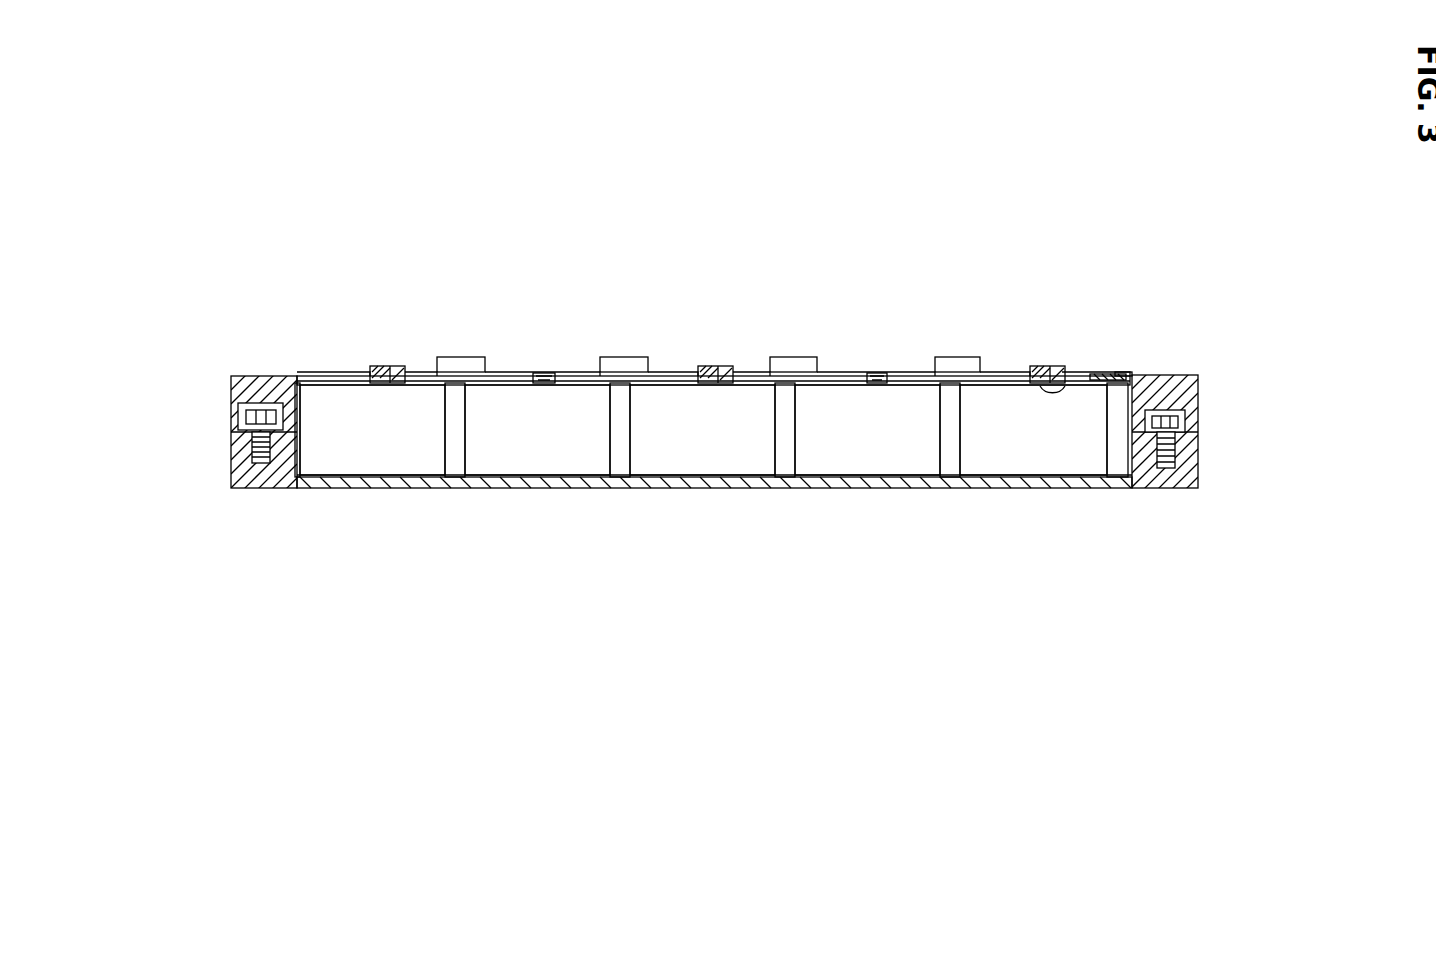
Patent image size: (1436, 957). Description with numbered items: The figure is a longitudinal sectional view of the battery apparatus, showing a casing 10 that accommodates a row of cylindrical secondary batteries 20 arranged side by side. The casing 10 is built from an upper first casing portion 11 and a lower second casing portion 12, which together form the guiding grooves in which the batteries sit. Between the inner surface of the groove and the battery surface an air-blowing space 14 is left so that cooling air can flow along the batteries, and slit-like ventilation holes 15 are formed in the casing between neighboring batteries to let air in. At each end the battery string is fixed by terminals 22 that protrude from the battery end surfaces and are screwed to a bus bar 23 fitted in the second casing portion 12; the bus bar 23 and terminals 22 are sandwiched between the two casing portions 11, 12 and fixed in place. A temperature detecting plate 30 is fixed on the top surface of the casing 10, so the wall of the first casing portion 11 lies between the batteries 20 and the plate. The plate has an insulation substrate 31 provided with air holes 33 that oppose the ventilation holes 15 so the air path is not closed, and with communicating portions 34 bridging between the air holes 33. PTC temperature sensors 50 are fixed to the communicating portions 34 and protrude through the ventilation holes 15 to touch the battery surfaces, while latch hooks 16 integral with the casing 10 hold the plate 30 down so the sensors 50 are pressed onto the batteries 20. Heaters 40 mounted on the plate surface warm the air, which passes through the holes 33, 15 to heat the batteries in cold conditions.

The casing 10 is at (756, 444).
The first casing portion 11 is at (1200, 400).
The second casing portion 12 is at (1200, 465).
The air-blowing space 14 is at (348, 478).
The ventilation hole 15 is at (505, 387).
The latch hook 16 is at (380, 366).
The secondary battery 20 is at (378, 455).
The terminal 22 is at (240, 420).
The bus bar 23 is at (250, 440).
The temperature detecting plate 30 is at (892, 322).
The insulation substrate 31 is at (1118, 374).
The air hole 33 is at (520, 370).
The communicating portion 34 is at (368, 372).
The heater 40 is at (460, 357).
The temperature sensor 50 is at (545, 385).